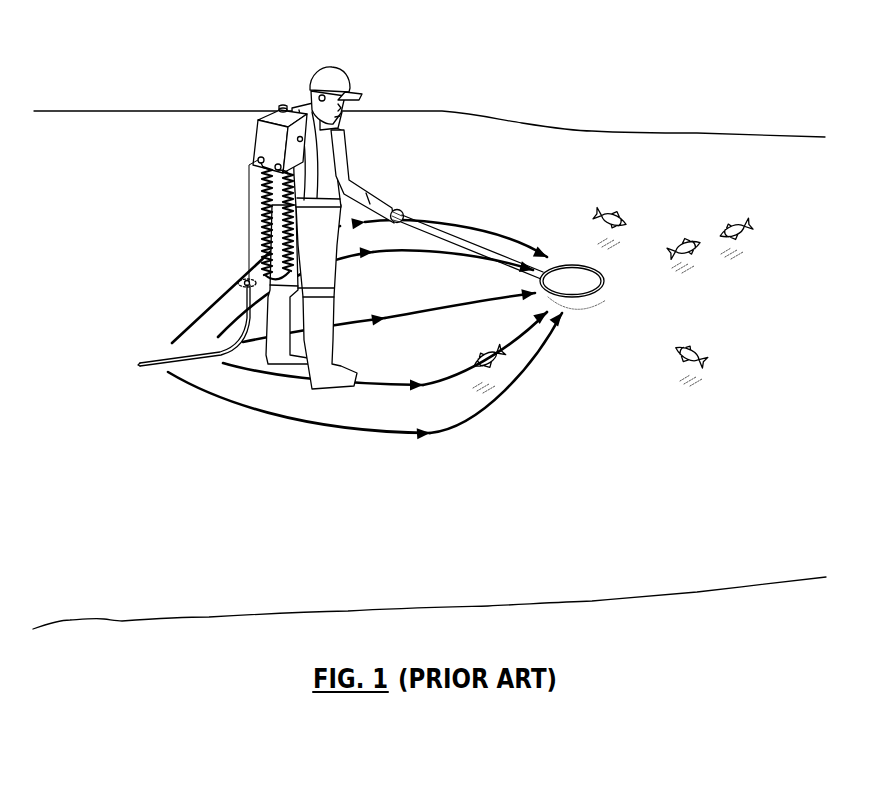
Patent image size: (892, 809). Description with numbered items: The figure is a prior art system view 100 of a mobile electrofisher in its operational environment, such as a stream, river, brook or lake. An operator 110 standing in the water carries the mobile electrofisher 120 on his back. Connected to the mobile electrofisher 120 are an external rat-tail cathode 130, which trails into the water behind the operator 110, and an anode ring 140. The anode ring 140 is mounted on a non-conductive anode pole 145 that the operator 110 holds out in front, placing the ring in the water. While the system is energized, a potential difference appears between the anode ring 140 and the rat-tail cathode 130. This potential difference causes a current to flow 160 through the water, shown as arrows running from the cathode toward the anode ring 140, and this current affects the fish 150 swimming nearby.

The prior art system view 100 is at (482, 81).
The operator 110 is at (355, 70).
The mobile electrofisher 120 is at (287, 110).
The external rat-tail cathode 130 is at (203, 350).
The anode ring 140 is at (569, 268).
The non-conductive anode pole 145 is at (452, 235).
The fish 150 is at (700, 228).
The current flow 160 is at (503, 360).